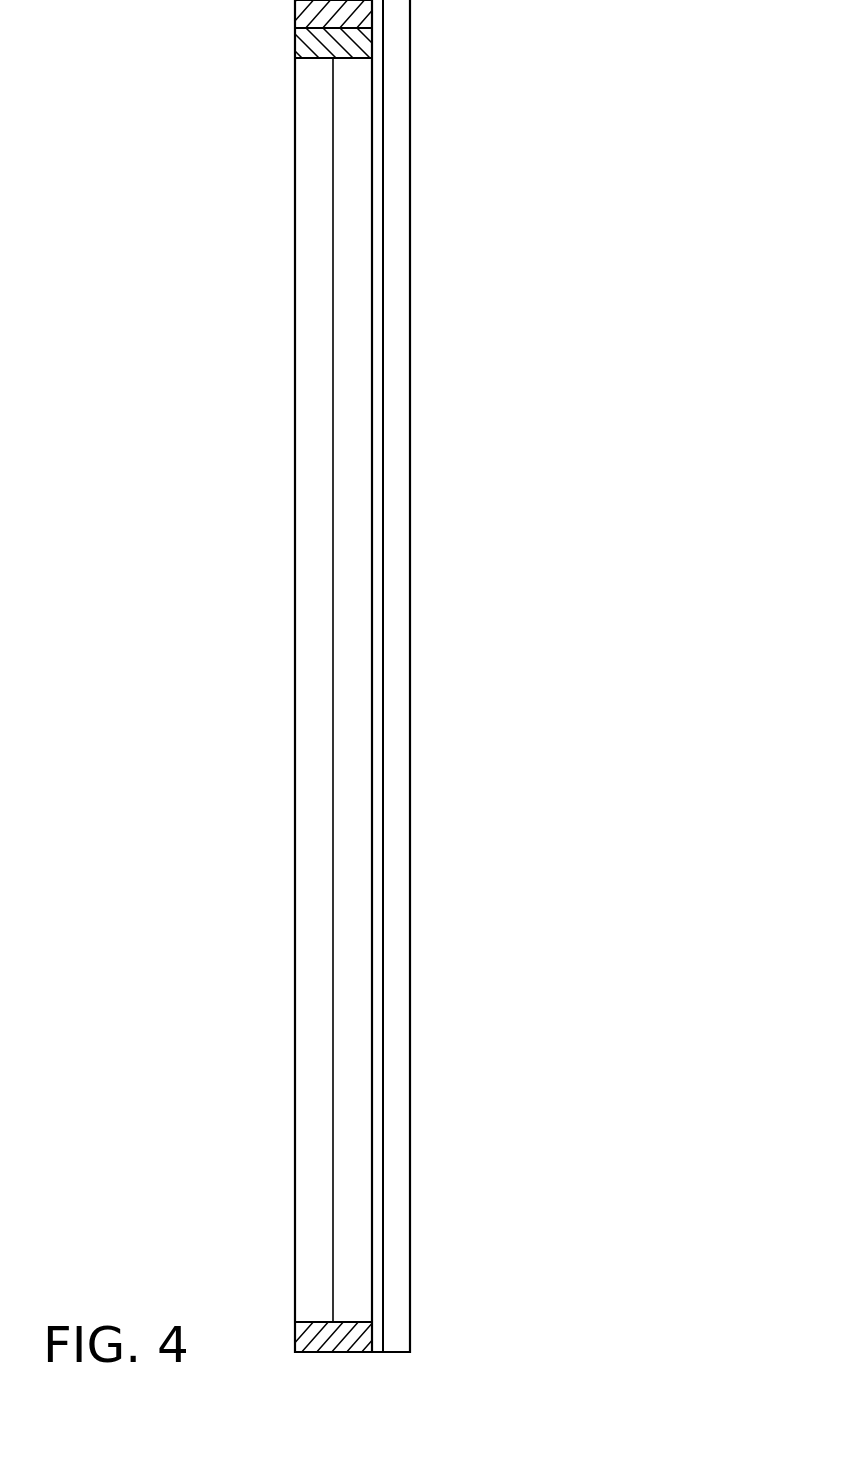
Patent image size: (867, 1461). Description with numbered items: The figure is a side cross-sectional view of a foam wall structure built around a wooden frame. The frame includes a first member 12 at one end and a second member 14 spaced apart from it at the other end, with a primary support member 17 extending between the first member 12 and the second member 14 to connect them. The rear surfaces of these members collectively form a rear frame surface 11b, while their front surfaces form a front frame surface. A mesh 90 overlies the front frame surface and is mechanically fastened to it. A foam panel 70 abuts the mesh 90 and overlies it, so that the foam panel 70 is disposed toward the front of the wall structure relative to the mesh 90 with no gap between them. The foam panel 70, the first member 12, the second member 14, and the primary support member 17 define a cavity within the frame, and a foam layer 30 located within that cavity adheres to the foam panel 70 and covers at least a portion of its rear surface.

The rear frame surface 11b is at (228, 181).
The first member 12 is at (285, 0).
The second member 14 is at (296, 1340).
The primary support member 17 is at (322, 712).
The foam layer 30 is at (334, 1017).
The mesh 90 is at (378, 212).
The foam panel 70 is at (411, 558).